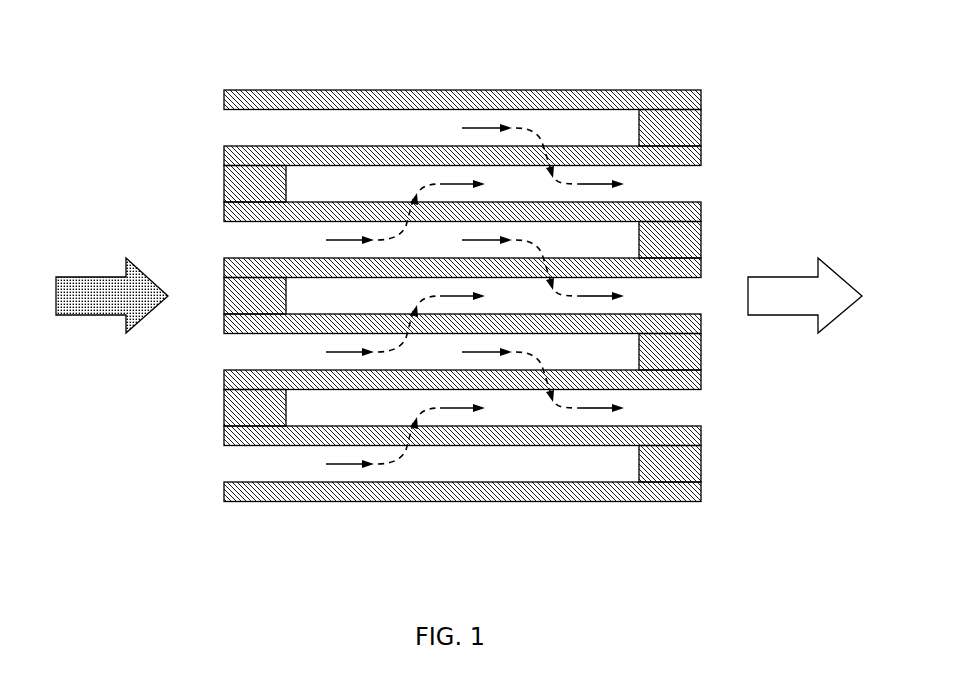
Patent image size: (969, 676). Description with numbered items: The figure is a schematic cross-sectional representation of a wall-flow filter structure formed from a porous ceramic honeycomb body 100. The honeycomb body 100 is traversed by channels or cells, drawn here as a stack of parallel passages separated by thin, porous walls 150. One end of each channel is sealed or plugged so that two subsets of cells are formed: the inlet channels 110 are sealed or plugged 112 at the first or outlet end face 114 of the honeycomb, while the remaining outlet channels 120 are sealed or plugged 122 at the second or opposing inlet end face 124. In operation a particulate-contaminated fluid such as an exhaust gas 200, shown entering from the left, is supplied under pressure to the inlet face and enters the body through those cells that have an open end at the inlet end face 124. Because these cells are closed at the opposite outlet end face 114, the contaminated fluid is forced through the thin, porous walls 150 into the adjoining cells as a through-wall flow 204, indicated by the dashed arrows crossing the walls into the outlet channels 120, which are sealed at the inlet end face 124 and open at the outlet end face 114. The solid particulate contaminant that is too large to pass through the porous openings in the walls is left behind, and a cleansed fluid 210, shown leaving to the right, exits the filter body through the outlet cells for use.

The porous ceramic honeycomb body 100 is at (394, 68).
The inlet channels 110 is at (442, 462).
The plug at outlet end face 112 is at (668, 460).
The outlet end face 114 is at (701, 340).
The outlet channels 120 is at (543, 407).
The plug at inlet end face 122 is at (258, 398).
The inlet end face 124 is at (225, 297).
The porous walls 150 is at (612, 147).
The exhaust gas 200 is at (105, 287).
The through-wall flow 204 is at (553, 173).
The cleansed fluid 210 is at (763, 288).